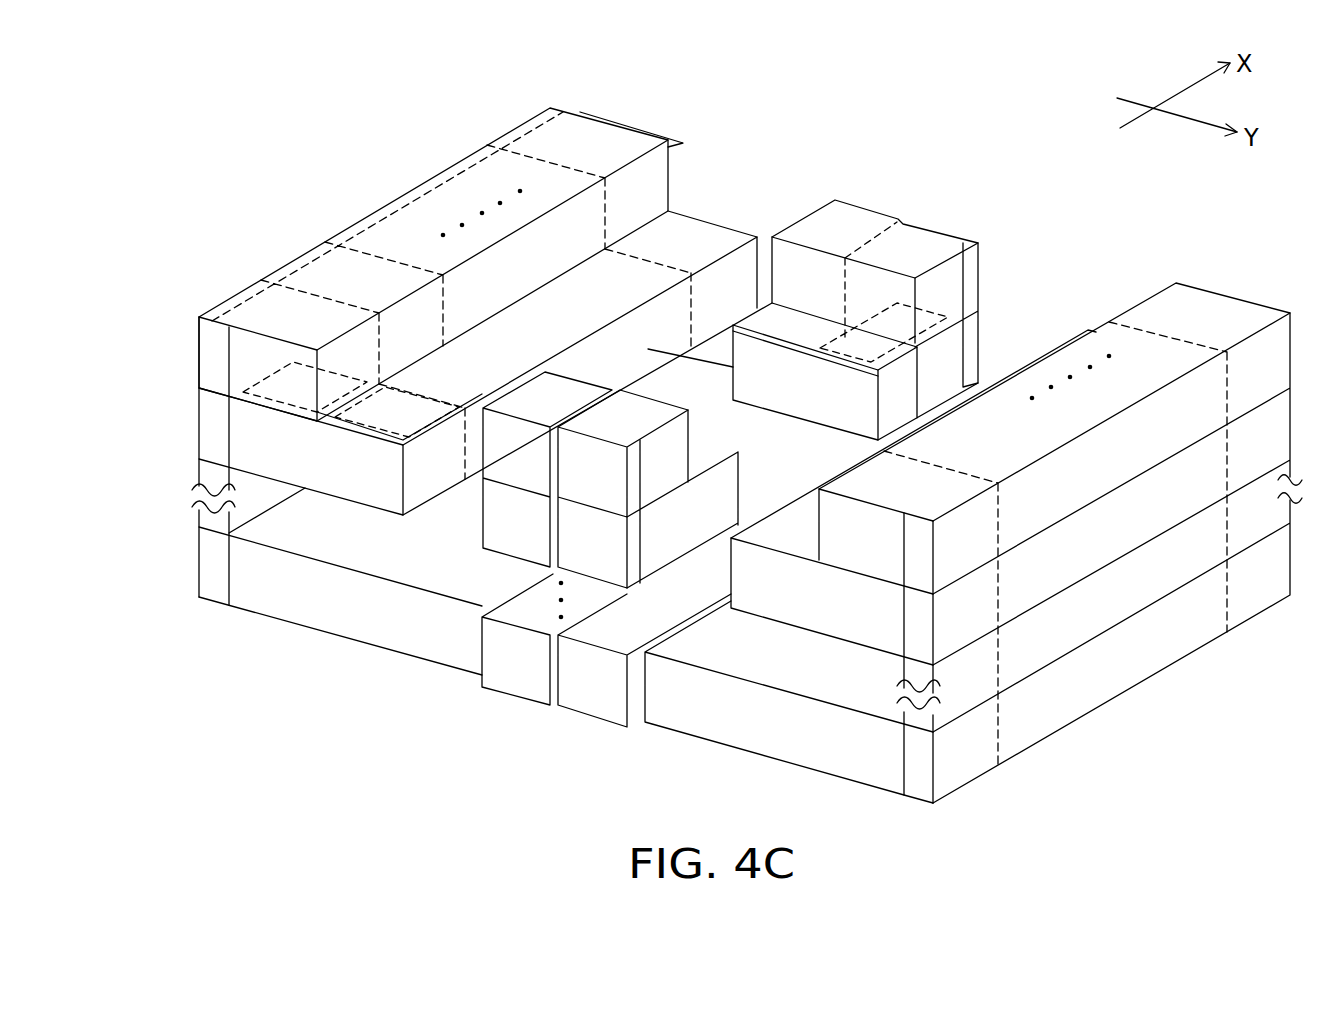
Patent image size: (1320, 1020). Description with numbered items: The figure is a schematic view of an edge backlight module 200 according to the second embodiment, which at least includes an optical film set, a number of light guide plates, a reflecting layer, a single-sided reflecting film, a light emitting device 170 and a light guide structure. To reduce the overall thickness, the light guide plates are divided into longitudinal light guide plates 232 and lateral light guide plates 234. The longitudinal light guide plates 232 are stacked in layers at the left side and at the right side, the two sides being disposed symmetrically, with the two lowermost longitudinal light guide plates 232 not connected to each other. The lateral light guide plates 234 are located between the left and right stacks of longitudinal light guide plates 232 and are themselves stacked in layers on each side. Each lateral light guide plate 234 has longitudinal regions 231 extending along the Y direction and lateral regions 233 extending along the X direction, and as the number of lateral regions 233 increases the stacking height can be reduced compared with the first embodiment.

The light emitting device 170 is at (1265, 318).
The edge backlight module 200 is at (721, 434).
The longitudinal region 231 is at (633, 125).
The longitudinal light guide plate 232 is at (370, 615).
The lateral region 233 is at (265, 405).
The lateral light guide plate 234 is at (920, 248).